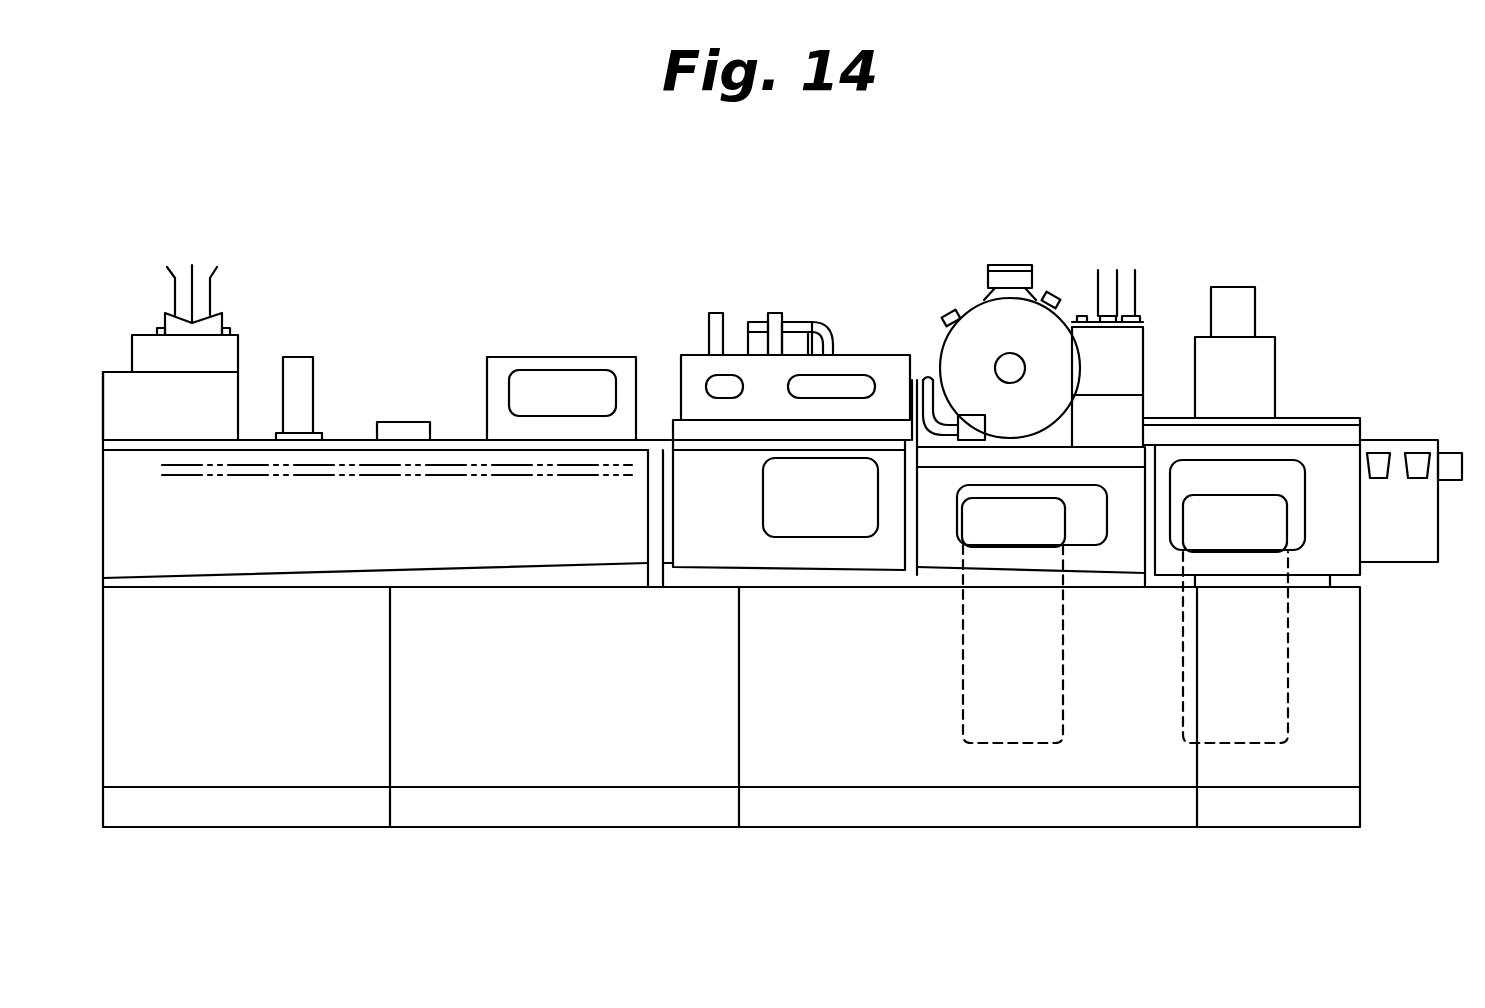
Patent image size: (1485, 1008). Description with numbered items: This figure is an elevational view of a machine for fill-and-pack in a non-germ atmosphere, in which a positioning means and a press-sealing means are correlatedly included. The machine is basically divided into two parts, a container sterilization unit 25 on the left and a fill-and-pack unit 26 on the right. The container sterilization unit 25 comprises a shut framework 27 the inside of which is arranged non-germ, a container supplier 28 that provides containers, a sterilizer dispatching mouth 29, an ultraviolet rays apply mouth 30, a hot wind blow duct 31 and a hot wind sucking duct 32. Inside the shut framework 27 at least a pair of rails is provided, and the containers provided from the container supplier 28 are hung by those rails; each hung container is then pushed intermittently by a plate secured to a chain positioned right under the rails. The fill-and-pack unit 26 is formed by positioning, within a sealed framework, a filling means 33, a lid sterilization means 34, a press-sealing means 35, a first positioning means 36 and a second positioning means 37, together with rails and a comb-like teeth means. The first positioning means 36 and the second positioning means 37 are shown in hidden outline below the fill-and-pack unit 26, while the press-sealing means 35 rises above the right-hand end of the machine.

The container sterilization unit 25 is at (433, 349).
The fill-and-pack unit 26 is at (916, 340).
The shut framework 27 is at (448, 440).
The container supplier 28 is at (213, 320).
The sterilizer dispatching mouth 29 is at (296, 370).
The ultraviolet rays apply mouth 30 is at (388, 426).
The hot wind blow duct 31 is at (521, 360).
The hot wind sucking duct 32 is at (716, 313).
The filling means 33 is at (776, 320).
The lid sterilization means 34 is at (1010, 265).
The press-sealing means 35 is at (1228, 298).
The first positioning means 36 is at (1018, 735).
The second positioning means 37 is at (1253, 735).